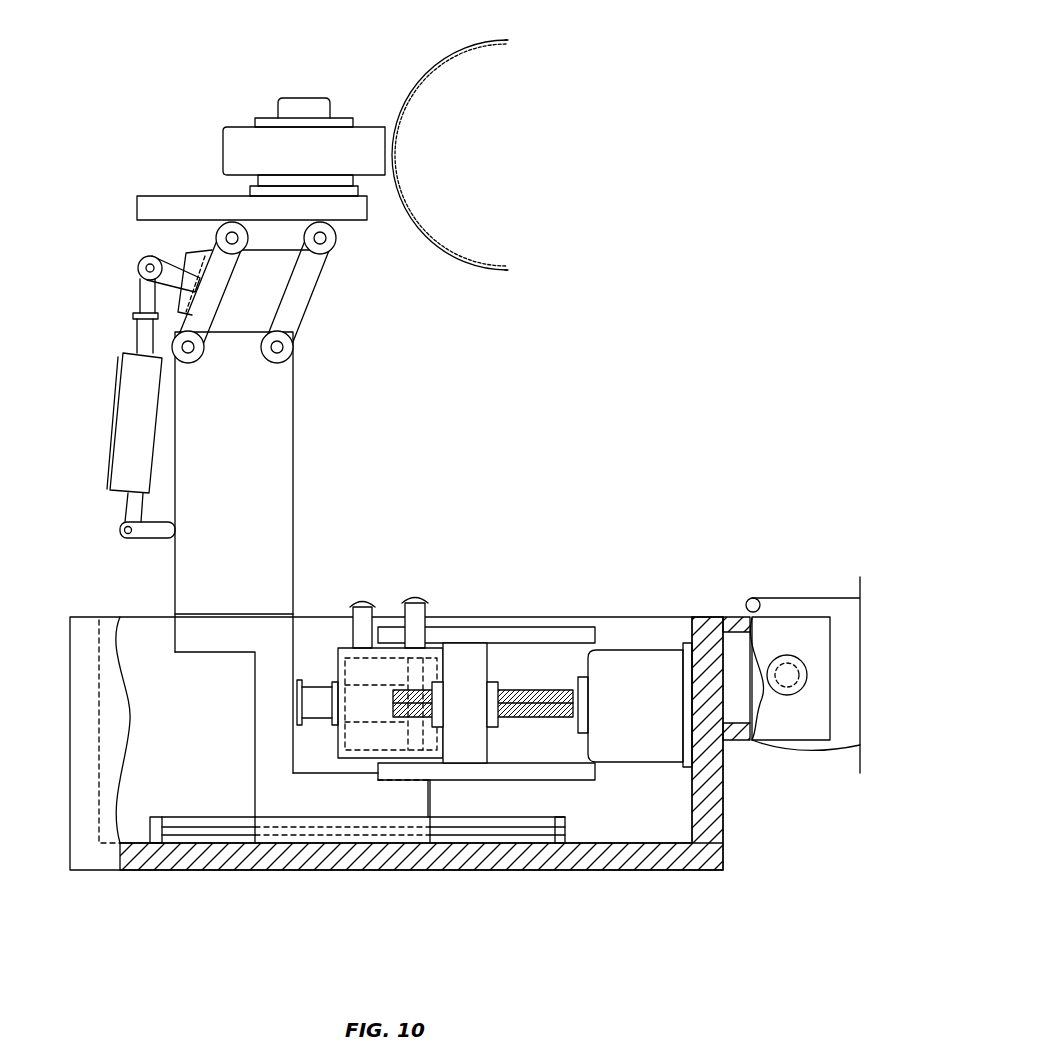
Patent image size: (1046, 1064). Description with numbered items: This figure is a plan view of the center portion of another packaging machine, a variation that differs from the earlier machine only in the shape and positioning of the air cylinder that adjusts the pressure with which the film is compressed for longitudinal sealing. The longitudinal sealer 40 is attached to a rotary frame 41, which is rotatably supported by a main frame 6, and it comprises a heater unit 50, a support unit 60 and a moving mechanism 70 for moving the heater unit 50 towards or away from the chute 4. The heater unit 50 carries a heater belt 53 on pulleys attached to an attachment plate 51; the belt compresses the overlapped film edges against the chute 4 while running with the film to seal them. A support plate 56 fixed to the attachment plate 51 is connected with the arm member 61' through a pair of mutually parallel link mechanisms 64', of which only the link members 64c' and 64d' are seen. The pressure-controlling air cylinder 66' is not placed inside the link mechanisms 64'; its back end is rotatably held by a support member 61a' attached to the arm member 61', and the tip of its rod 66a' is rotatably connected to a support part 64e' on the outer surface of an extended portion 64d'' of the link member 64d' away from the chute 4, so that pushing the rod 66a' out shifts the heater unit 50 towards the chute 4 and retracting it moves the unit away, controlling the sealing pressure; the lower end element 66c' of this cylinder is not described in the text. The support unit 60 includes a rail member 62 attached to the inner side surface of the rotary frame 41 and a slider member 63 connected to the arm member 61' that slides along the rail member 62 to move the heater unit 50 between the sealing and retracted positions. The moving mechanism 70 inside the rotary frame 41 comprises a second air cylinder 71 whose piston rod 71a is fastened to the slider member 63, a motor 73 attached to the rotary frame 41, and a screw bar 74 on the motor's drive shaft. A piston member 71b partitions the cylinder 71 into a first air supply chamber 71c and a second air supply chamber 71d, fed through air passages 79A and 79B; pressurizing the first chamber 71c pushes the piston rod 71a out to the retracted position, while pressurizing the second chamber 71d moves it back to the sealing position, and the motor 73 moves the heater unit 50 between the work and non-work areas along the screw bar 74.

The chute 4 is at (443, 60).
The main frame 6 is at (842, 742).
The longitudinal sealer 40 is at (484, 465).
The rotary frame 41 is at (447, 868).
The heater unit 50 is at (158, 158).
The attachment plate 51 is at (137, 205).
The heater belt 53 is at (232, 140).
The support plate 56 is at (342, 223).
The support unit 60 is at (307, 553).
The arm member 61' is at (270, 552).
The support member 61a' is at (143, 548).
The rail member 62 is at (190, 830).
The slider member 63 is at (188, 632).
The link mechanisms 64' is at (256, 275).
The link member 64c' is at (316, 292).
The link member 64d' is at (225, 292).
The extended portion 64d'' is at (179, 239).
The support part 64e' is at (163, 259).
The pressure-controlling air cylinder 66' is at (173, 427).
The rod 66a' is at (186, 336).
The cylinder lower rod 66c' is at (181, 501).
The moving mechanism 70 is at (531, 608).
The second air cylinder 71 is at (355, 693).
The piston rod 71a is at (308, 707).
The piston member 71b is at (423, 655).
The first air supply chamber 71c is at (430, 737).
The second air supply chamber 71d is at (357, 670).
The motor 73 is at (625, 673).
The screw bar 74 is at (523, 692).
The air passage 79A is at (418, 601).
The air passage 79B is at (365, 604).